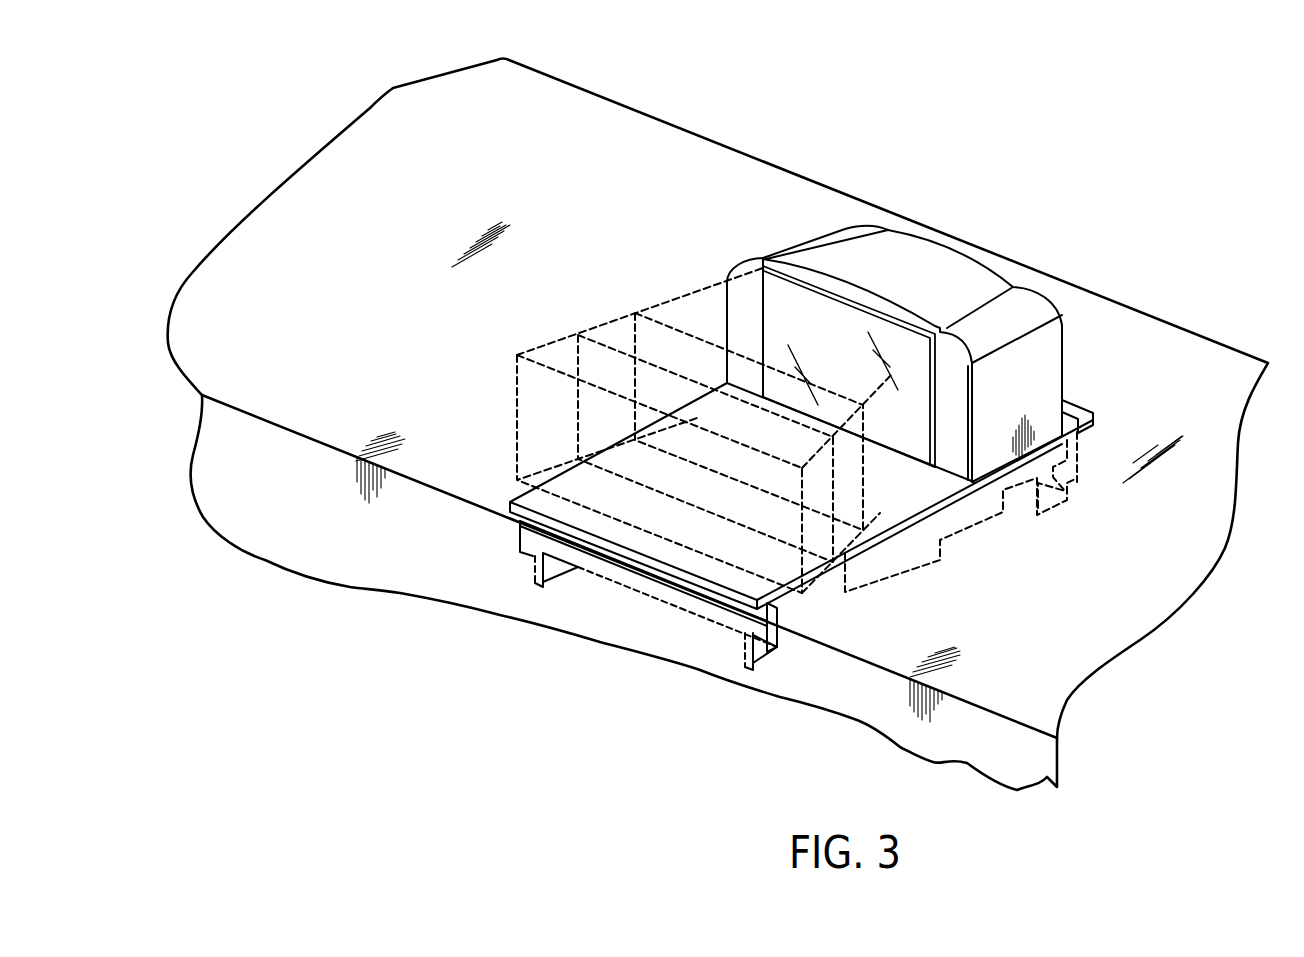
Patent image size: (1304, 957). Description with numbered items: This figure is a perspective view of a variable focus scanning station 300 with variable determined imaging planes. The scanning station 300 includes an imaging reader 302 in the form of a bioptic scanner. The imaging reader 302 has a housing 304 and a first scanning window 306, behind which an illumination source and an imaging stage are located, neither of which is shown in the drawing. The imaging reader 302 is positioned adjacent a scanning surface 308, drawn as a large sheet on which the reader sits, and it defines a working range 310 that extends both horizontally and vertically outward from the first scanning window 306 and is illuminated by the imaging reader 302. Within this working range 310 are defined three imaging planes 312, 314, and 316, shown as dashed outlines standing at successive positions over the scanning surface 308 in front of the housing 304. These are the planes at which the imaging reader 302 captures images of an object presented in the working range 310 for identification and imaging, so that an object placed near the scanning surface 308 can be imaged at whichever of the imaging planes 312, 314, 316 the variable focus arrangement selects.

The scanning station 300 is at (246, 98).
The imaging reader 302 is at (803, 226).
The housing 304 is at (1040, 343).
The first scanning window 306 is at (900, 340).
The scanning surface 308 is at (460, 492).
The working range 310 is at (693, 290).
The imaging plane 312 is at (635, 313).
The imaging plane 314 is at (578, 335).
The imaging plane 316 is at (517, 355).